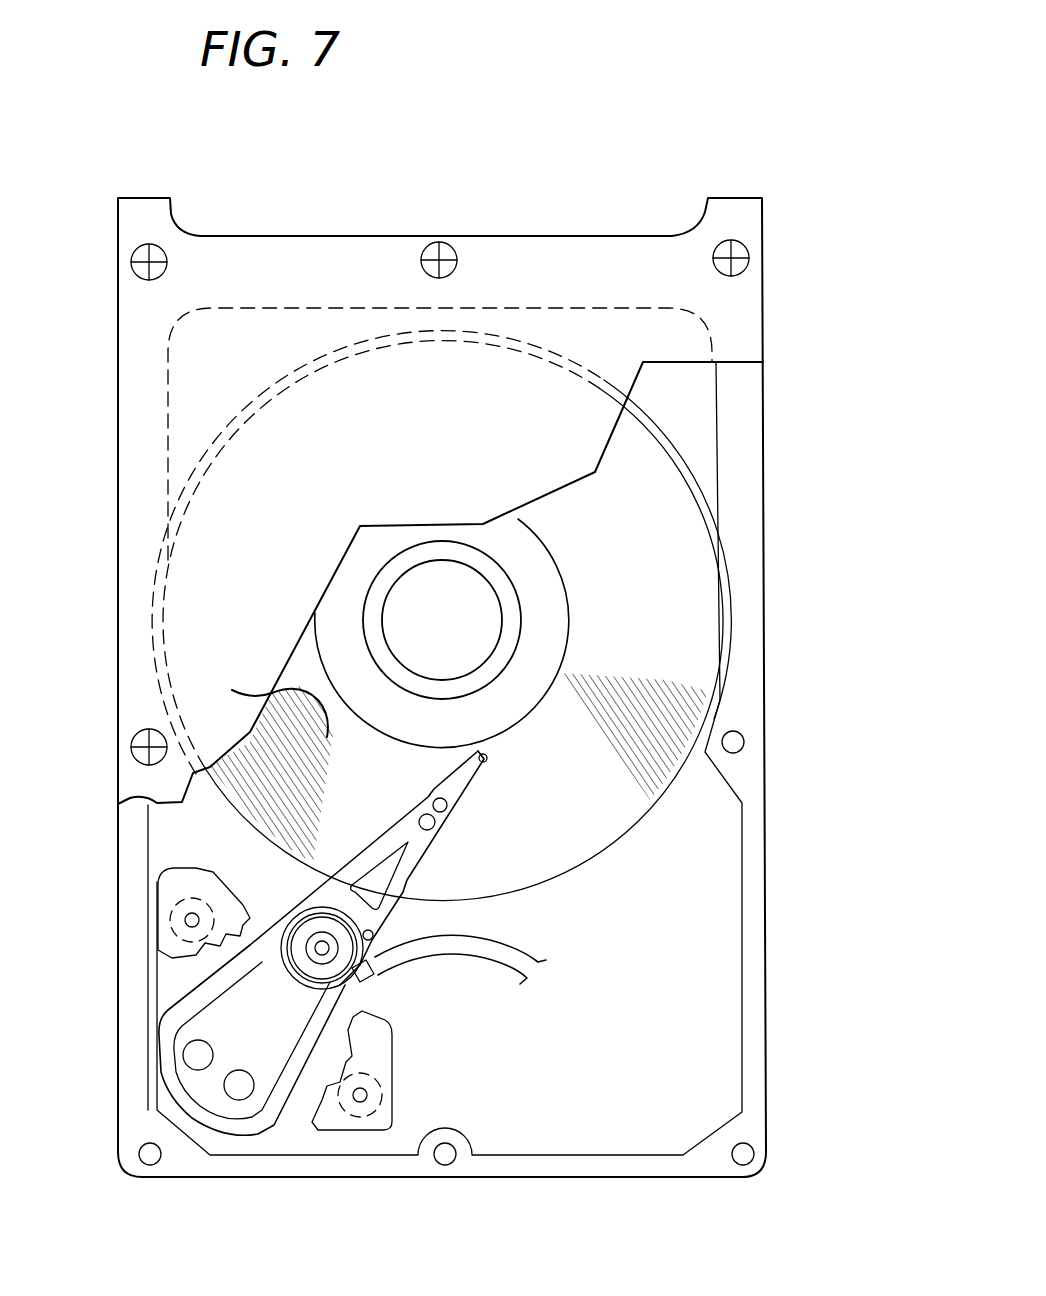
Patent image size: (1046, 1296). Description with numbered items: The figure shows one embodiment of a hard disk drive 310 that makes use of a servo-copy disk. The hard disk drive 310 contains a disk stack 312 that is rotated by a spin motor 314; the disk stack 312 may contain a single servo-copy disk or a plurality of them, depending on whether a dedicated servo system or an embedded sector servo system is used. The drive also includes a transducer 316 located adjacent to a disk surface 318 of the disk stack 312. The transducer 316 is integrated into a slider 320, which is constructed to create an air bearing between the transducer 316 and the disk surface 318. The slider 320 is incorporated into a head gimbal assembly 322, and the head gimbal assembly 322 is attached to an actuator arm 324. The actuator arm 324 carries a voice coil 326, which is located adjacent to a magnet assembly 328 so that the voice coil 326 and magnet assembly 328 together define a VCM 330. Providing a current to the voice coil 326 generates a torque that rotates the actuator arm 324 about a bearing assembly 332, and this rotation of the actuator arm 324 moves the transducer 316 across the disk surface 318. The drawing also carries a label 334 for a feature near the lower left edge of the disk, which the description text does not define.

The hard disk drive 310 is at (707, 133).
The disk stack 312 is at (655, 502).
The spin motor 314 is at (442, 622).
The transducer 316 is at (485, 757).
The disk surface 318 is at (630, 698).
The slider 320 is at (484, 770).
The head gimbal assembly 322 is at (448, 857).
The actuator arm 324 is at (230, 980).
The voice coil 326 is at (183, 1045).
The magnet assembly 328 is at (177, 982).
The VCM 330 is at (285, 1135).
The bearing assembly 332 is at (328, 956).
The latch 334 is at (253, 773).